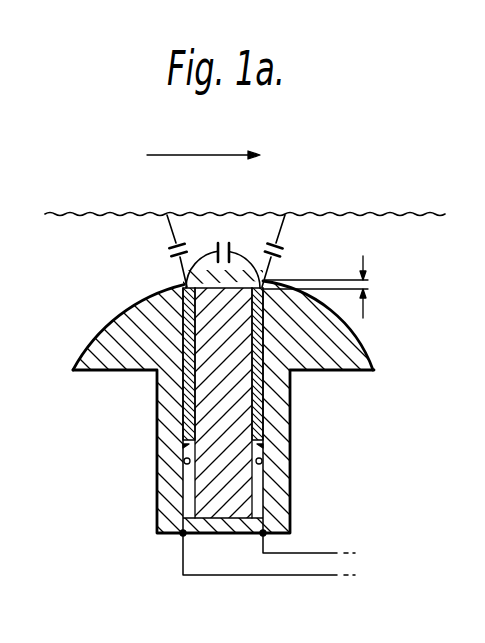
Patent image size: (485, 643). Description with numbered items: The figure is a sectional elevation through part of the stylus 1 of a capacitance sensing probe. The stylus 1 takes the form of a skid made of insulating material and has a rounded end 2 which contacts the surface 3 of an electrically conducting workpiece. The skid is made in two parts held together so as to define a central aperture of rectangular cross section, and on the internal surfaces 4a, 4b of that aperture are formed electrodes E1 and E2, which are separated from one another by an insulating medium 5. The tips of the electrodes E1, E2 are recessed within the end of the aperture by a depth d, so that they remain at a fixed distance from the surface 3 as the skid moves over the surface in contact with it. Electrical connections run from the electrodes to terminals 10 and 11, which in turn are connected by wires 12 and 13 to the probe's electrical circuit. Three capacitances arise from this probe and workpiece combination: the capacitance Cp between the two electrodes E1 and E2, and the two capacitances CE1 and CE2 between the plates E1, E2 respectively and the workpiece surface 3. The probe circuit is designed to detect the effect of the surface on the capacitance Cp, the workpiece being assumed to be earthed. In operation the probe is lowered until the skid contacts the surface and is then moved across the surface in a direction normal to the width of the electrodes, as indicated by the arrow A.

The stylus 1 is at (163, 407).
The rounded end 2 is at (97, 340).
The surface 3 is at (367, 214).
The internal surface of the aperture 4a is at (186, 462).
The internal surface of the aperture 4b is at (262, 453).
The insulating medium 5 is at (197, 493).
The terminal 10 is at (182, 537).
The terminal 11 is at (262, 537).
The wire 12 is at (275, 576).
The wire 13 is at (313, 553).
The electrode E1 is at (188, 332).
The electrode E2 is at (260, 378).
The capacitance between electrode E1 and workpiece surface CE1 is at (172, 246).
The capacitance between electrode E2 and workpiece surface CE2 is at (279, 247).
The capacitance between the two electrodes Cp is at (217, 252).
The depth d is at (325, 287).
The arrow A is at (203, 145).